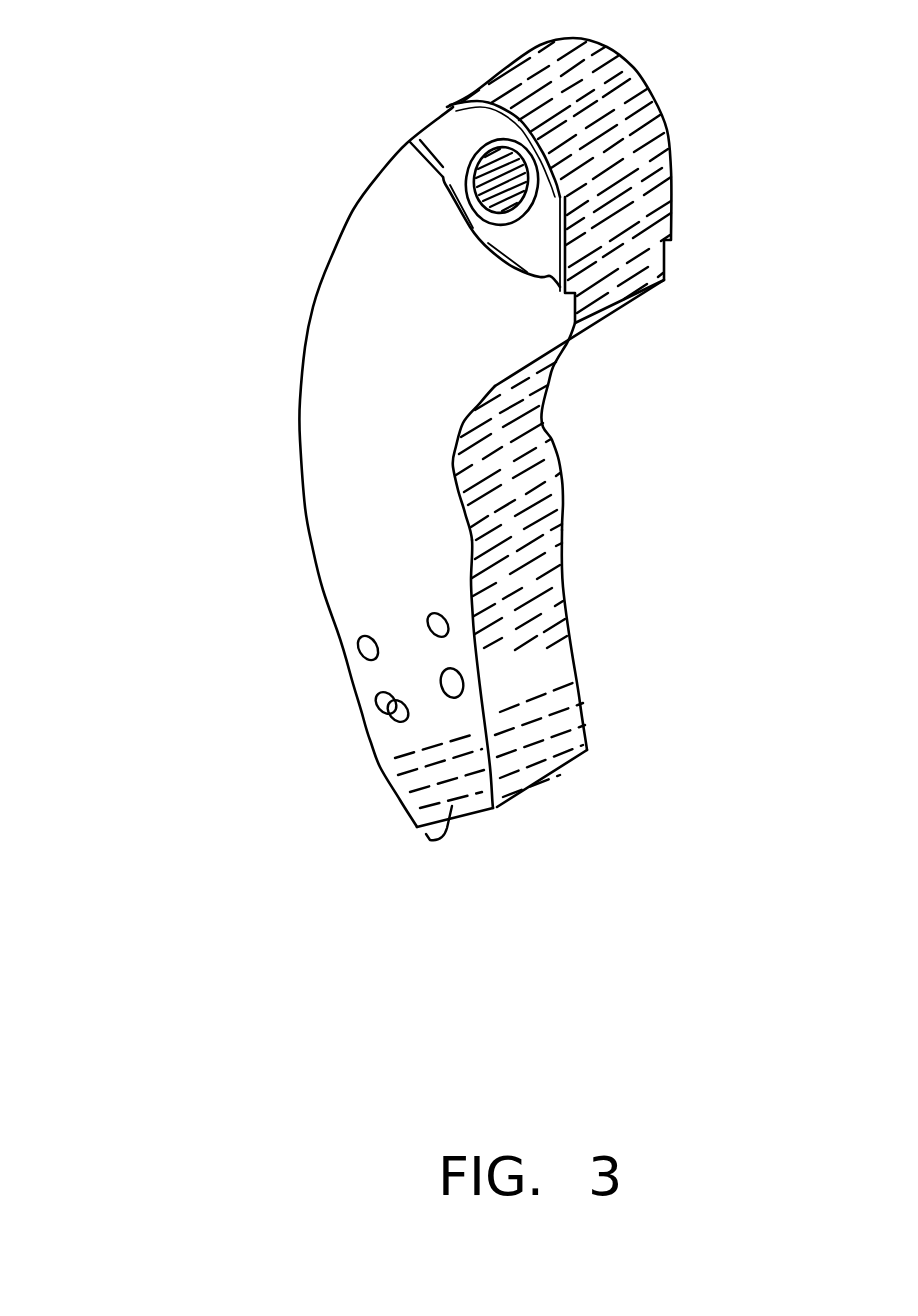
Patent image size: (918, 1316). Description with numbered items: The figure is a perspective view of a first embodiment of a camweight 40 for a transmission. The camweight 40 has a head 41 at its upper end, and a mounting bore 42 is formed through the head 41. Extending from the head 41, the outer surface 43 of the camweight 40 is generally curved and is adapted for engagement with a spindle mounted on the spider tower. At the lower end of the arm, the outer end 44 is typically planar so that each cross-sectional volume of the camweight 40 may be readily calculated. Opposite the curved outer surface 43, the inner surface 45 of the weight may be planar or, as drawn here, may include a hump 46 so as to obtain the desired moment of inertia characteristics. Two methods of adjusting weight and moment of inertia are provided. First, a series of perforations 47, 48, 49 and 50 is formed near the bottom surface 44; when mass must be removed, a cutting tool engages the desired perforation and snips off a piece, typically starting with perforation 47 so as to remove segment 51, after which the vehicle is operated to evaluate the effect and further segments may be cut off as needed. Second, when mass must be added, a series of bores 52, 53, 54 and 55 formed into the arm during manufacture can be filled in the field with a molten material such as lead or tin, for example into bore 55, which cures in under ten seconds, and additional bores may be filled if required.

The camweight 40 is at (172, 528).
The head 41 is at (633, 178).
The mounting bore 42 is at (468, 165).
The outer surface 43 is at (305, 348).
The outer end 44 is at (483, 813).
The inner surface 45 is at (538, 608).
The hump 46 is at (525, 497).
The perforation 47 is at (413, 810).
The perforation 48 is at (413, 792).
The perforation 49 is at (397, 778).
The perforation 50 is at (380, 753).
The segment 51 is at (425, 838).
The bore 52 is at (370, 637).
The bore 53 is at (443, 617).
The bore 54 is at (401, 721).
The bore 55 is at (463, 680).